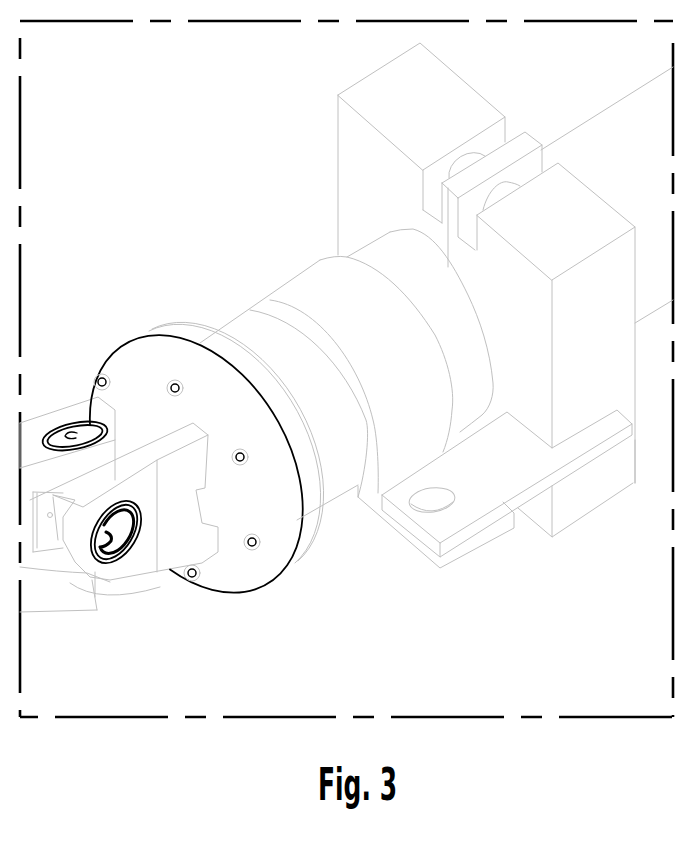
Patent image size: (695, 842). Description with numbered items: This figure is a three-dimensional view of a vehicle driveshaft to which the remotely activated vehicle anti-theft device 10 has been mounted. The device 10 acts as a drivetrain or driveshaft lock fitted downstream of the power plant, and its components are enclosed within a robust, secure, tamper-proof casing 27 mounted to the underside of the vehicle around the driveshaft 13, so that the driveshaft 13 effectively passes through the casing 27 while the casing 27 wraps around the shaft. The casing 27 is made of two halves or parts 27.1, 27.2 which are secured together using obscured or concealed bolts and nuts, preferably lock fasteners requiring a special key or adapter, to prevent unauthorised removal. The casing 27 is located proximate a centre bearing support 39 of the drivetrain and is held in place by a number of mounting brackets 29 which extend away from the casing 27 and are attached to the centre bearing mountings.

The remotely activated vehicle anti-theft device 10 is at (274, 635).
The driveshaft 13 is at (237, 337).
The centre bearing support 39 is at (380, 302).
The mounting brackets 29 is at (532, 447).
The casing 27 is at (577, 497).
The first casing part 27.1 is at (563, 190).
The second casing part 27.2 is at (465, 107).